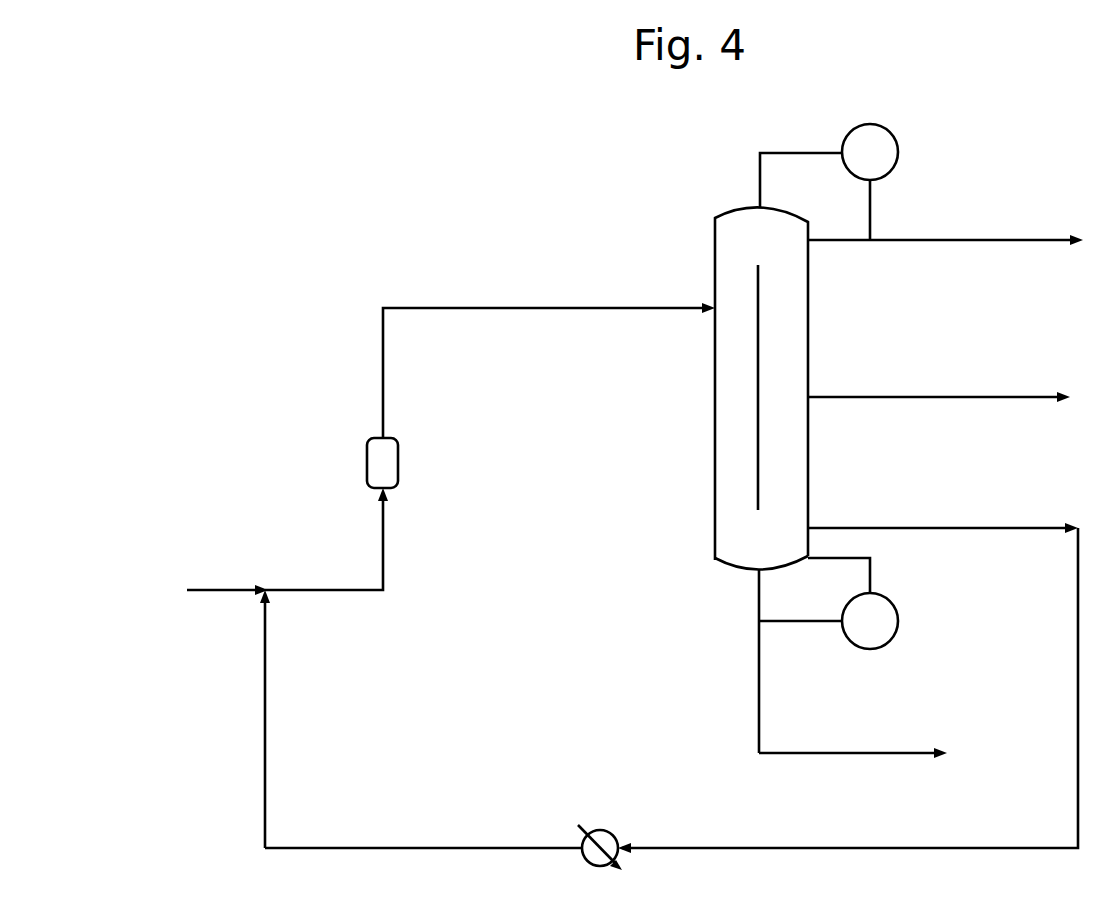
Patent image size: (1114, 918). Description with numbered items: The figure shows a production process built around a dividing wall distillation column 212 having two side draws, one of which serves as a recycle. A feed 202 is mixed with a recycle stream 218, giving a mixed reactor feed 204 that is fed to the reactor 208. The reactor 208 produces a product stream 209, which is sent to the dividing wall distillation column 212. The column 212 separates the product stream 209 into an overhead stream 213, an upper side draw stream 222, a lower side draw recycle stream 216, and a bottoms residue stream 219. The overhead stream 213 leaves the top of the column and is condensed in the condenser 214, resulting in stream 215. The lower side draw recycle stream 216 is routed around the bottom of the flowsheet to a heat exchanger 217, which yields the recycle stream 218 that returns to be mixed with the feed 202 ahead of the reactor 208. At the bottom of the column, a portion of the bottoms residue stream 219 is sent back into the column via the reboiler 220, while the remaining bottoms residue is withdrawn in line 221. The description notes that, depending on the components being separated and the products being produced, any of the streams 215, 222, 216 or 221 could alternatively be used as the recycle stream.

The feed 202 is at (203, 588).
The mixed reactor feed 204 is at (322, 587).
The reactor 208 is at (367, 463).
The product stream 209 is at (416, 302).
The dividing wall distillation column 212 is at (710, 413).
The overhead stream 213 is at (762, 146).
The condenser 214 is at (900, 150).
The stream 215 is at (988, 236).
The lower side draw recycle stream 216 is at (978, 523).
The heat exchanger 217 is at (594, 876).
The recycle stream 218 is at (262, 748).
The bottoms residue stream 219 is at (750, 598).
The reboiler 220 is at (903, 604).
The line 221 is at (825, 748).
The upper side draw stream 222 is at (980, 390).